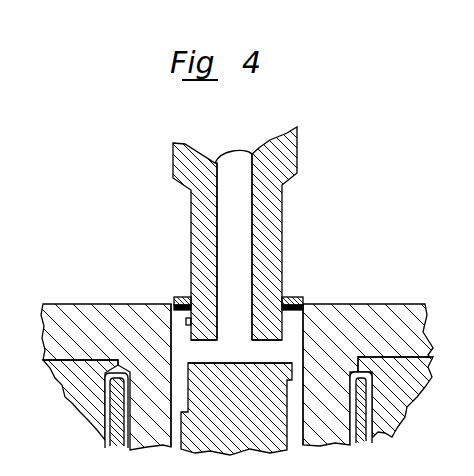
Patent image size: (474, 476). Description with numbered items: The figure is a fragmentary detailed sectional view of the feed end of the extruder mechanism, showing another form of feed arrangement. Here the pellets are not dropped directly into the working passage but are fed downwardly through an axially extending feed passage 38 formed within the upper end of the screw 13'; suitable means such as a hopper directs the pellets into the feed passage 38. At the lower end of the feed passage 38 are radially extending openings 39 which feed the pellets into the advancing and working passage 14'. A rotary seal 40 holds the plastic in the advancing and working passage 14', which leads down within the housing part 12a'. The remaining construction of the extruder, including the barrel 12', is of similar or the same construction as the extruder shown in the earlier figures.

The barrel 12' is at (252, 402).
The housing part 12a' is at (243, 362).
The screw 13' is at (261, 233).
The advancing and working passage 14' is at (271, 363).
The feed passage 38 is at (240, 220).
The radially extending openings 39 is at (202, 351).
The rotary seal 40 is at (295, 297).